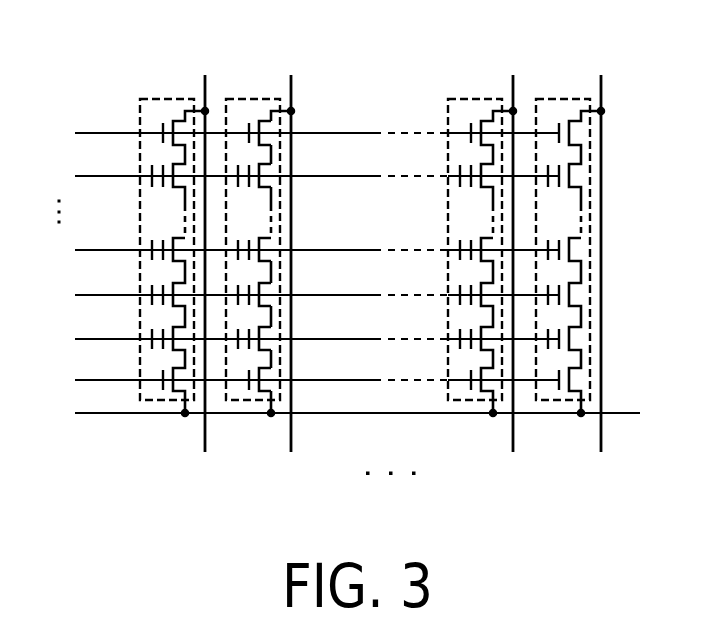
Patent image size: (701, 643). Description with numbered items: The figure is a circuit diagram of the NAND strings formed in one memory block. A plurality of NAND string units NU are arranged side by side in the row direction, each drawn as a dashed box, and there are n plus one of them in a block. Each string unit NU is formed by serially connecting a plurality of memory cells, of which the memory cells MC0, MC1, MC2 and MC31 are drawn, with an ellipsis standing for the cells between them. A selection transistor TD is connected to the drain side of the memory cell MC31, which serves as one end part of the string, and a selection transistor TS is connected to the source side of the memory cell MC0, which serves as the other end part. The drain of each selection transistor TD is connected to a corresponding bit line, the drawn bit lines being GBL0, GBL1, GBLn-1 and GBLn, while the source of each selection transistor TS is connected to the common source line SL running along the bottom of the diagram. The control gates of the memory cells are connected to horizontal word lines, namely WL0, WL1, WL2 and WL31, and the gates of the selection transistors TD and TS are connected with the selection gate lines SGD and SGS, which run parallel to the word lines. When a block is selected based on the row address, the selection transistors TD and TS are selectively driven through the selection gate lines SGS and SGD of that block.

The NAND string unit NU is at (169, 97).
The selection transistor TD is at (268, 139).
The memory cell MC31 is at (268, 182).
The memory cell MC2 is at (268, 256).
The memory cell MC1 is at (268, 301).
The memory cell MC0 is at (268, 345).
The selection transistor TS is at (268, 386).
The selection gate line SGD is at (296, 133).
The word line WL31 is at (290, 176).
The word line WL2 is at (295, 250).
The word line WL1 is at (295, 295).
The word line WL0 is at (295, 339).
The selection gate line SGS is at (296, 380).
The common source line SL is at (343, 413).
The bit line GBL0 is at (207, 282).
The bit line GBL1 is at (291, 282).
The bit line GBLn-1 is at (511, 282).
The bit line GBLn is at (603, 282).